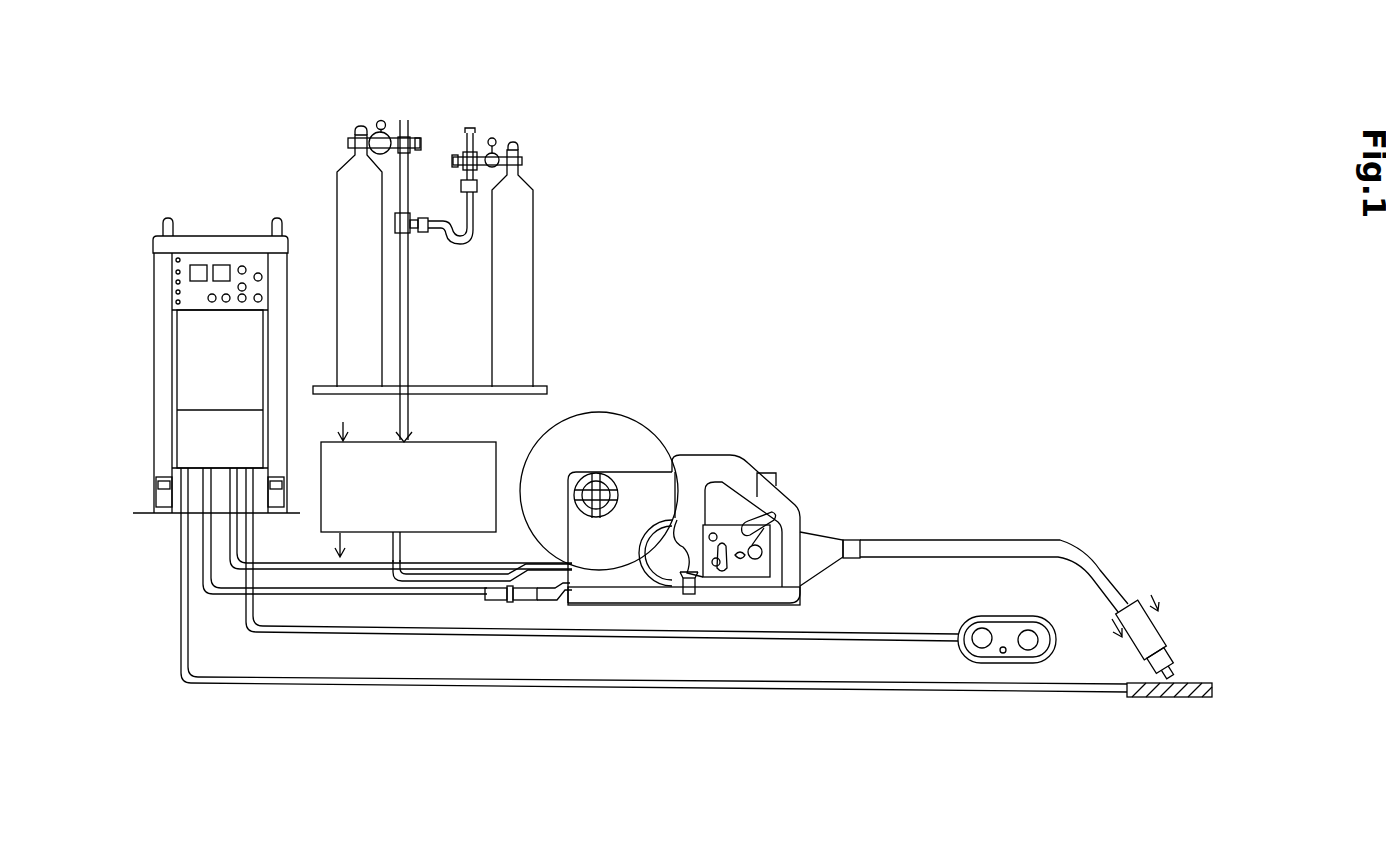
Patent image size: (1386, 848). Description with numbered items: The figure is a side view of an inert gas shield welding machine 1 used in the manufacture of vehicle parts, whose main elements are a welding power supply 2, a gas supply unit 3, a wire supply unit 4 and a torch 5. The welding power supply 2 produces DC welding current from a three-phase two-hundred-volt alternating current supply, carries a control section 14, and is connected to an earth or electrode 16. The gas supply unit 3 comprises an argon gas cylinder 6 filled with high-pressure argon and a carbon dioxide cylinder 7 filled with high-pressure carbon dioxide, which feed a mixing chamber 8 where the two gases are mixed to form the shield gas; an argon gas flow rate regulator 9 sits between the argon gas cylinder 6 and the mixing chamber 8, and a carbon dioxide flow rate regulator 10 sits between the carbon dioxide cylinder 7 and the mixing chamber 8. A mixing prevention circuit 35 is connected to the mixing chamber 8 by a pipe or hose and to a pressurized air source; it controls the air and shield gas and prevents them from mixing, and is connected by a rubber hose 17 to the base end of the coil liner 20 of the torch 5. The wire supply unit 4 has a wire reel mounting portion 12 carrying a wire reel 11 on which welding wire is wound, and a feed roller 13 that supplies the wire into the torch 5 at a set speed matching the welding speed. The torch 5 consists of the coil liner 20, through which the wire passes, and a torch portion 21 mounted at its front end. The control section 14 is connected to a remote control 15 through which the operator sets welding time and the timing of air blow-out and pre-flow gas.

The inert gas shield welding machine 1 is at (692, 262).
The welding power supply 2 is at (215, 231).
The gas supply unit 3 is at (515, 112).
The wire supply unit 4 is at (757, 422).
The torch 5 is at (1140, 555).
The argon gas cylinder 6 is at (513, 263).
The carbon dioxide cylinder 7 is at (343, 212).
The mixing chamber 8 is at (410, 211).
The argon gas flow rate regulator 9 is at (468, 130).
The carbon dioxide flow rate regulator 10 is at (401, 121).
The wire reel 11 is at (628, 437).
The wire reel mounting portion 12 is at (590, 474).
The feed roller 13 is at (763, 527).
The control section 14 is at (186, 360).
The remote control 15 is at (985, 663).
The earth or electrode 16 is at (1157, 697).
The rubber hose 17 is at (420, 585).
The coil liner 20 is at (988, 548).
The torch portion 21 is at (1175, 642).
The mixing prevention circuit 35 is at (457, 441).